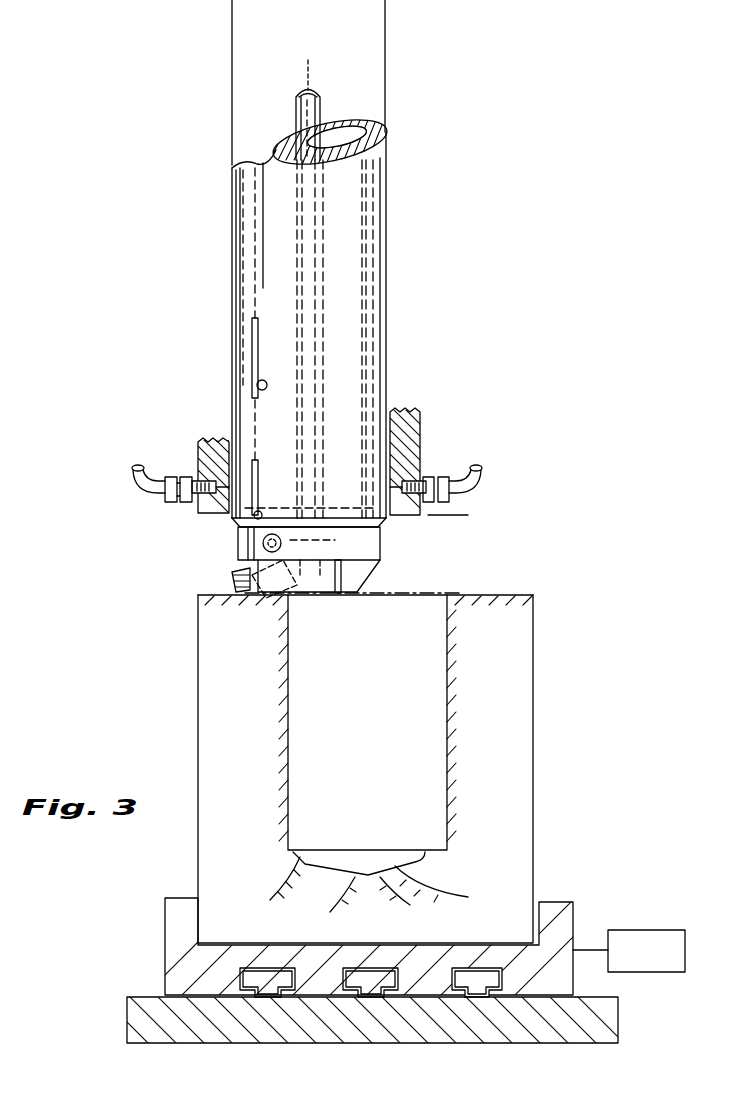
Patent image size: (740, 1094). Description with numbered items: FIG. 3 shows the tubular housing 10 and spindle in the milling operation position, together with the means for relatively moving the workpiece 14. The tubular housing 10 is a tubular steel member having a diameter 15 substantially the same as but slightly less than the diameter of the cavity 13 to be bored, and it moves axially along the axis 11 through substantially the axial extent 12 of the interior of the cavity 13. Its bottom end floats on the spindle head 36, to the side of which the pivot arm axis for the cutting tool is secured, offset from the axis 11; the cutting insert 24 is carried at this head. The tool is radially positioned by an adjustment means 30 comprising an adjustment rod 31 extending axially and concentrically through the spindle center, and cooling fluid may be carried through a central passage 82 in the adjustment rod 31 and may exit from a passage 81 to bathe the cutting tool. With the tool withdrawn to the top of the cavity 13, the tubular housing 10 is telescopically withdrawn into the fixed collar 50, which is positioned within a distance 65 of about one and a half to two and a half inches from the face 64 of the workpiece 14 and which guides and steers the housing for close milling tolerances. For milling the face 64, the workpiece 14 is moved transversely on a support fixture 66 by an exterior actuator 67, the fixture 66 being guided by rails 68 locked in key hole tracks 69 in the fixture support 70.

The tubular housing 10 is at (372, 120).
The axis 11 is at (308, 73).
The axial extent 12 is at (397, 597).
The cavity 13 is at (290, 690).
The workpiece 14 is at (513, 683).
The diameter 15 is at (385, 10).
The cutting insert 24 is at (236, 585).
The adjustment means 30 is at (334, 388).
The adjustment rod 31 is at (325, 92).
The spindle head 36 is at (313, 559).
The collar 50 is at (420, 442).
The face 64 is at (533, 595).
The distance 65 is at (452, 515).
The support fixture 66 is at (562, 918).
The exterior actuator 67 is at (646, 951).
The rails 68 is at (405, 490).
The key hole tracks 69 is at (452, 975).
The fixture support 70 is at (483, 1025).
The passage 81 is at (337, 595).
The central passage 82 is at (290, 124).